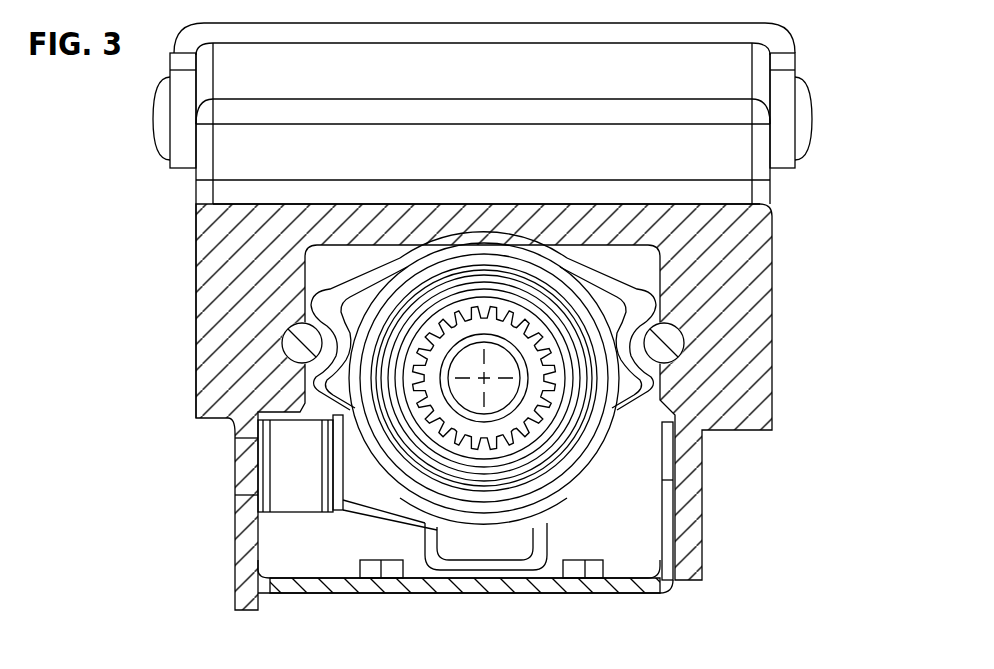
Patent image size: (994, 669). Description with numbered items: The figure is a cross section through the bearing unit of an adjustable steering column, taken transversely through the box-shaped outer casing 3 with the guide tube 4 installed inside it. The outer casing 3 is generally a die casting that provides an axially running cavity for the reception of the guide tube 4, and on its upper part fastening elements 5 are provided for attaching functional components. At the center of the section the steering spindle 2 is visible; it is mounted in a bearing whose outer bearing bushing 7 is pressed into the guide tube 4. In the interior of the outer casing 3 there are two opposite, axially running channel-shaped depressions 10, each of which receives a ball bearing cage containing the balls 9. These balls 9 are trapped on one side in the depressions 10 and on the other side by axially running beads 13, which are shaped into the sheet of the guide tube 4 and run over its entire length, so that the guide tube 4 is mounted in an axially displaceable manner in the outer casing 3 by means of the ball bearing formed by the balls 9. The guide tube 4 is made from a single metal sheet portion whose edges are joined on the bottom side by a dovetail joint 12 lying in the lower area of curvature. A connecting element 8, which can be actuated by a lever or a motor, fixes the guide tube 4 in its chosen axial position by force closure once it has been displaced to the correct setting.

The steering spindle 2 is at (473, 402).
The box-shaped outer casing 3 is at (245, 387).
The guide tube 4 is at (543, 507).
The fastening elements 5 is at (718, 150).
The bearing bushing 7 is at (427, 472).
The connecting element 8 is at (292, 487).
The balls 9 is at (298, 352).
The channel-shaped depressions 10 is at (677, 360).
The dovetail joint 12 is at (495, 527).
The axially running beads 13 is at (303, 323).